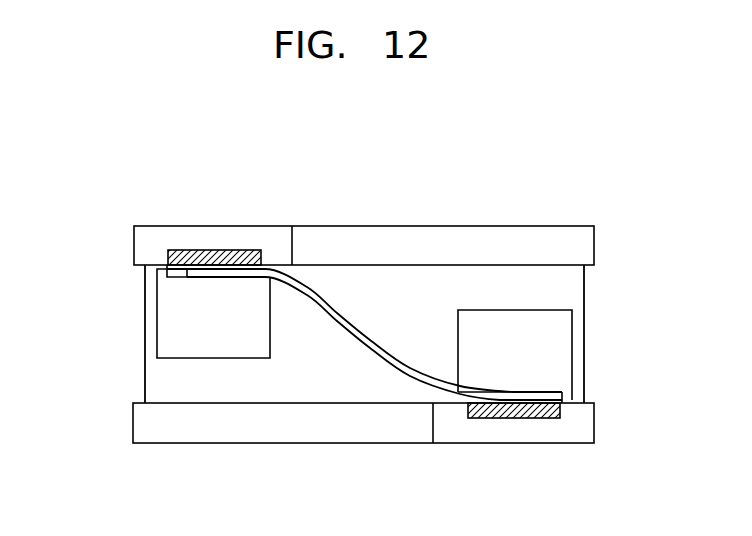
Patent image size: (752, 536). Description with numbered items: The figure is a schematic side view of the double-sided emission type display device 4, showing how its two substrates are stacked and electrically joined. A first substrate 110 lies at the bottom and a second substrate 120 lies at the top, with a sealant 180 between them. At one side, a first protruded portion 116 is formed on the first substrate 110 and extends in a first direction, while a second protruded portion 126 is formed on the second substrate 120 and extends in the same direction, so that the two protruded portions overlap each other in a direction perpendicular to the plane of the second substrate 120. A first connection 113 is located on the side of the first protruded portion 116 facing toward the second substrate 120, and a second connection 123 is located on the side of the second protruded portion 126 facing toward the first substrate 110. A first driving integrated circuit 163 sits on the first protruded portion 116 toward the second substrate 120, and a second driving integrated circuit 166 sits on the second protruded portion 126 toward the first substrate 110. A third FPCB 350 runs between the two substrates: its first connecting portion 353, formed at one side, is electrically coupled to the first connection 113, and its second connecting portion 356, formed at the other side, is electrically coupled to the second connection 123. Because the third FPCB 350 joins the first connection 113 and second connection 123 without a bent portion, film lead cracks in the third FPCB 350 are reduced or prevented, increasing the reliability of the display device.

The double-sided emission type display device 4 is at (554, 192).
The first substrate 110 is at (138, 420).
The first connection 113 is at (513, 420).
The first protruded portion 116 is at (588, 423).
The second substrate 120 is at (590, 246).
The second connection 123 is at (199, 250).
The second protruded portion 126 is at (138, 246).
The first driving integrated circuit 163 is at (565, 342).
The second driving integrated circuit 166 is at (165, 334).
The sealant 180 is at (572, 293).
The third FPCB 350 is at (372, 355).
The first connecting portion 353 is at (537, 402).
The second connecting portion 356 is at (186, 272).